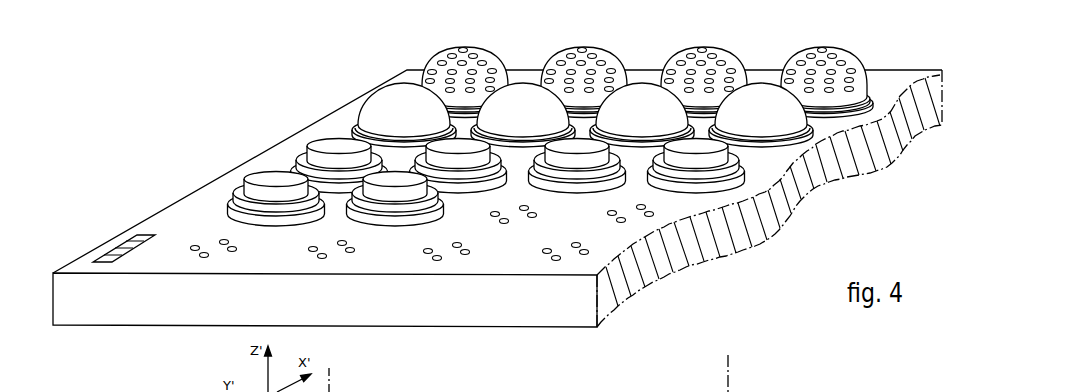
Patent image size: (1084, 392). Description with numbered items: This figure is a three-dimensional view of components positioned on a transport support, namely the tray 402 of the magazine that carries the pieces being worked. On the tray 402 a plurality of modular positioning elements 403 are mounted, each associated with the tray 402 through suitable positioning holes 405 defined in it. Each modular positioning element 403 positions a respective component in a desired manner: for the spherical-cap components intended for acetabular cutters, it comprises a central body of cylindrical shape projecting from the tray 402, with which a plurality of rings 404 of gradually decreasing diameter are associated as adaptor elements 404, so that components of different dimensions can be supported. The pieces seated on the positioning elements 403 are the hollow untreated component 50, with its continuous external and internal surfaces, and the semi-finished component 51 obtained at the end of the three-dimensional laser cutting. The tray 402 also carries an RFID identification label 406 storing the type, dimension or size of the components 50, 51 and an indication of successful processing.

The tray 402 is at (125, 333).
The modular positioning element 403 is at (270, 180).
The adaptor element 404 is at (232, 211).
The positioning hole 405 is at (542, 251).
The RFID identification label 406 is at (115, 251).
The untreated component 50 is at (755, 100).
The semi-finished component 51 is at (842, 59).